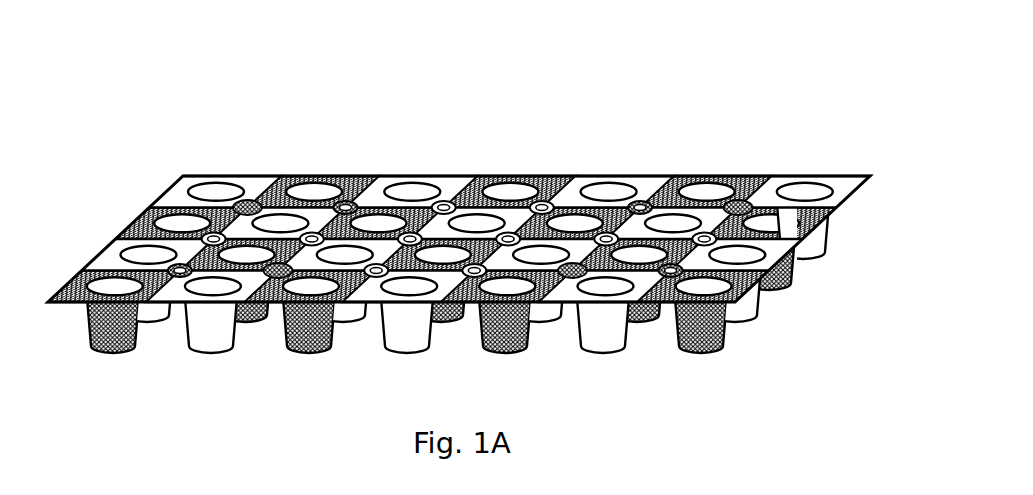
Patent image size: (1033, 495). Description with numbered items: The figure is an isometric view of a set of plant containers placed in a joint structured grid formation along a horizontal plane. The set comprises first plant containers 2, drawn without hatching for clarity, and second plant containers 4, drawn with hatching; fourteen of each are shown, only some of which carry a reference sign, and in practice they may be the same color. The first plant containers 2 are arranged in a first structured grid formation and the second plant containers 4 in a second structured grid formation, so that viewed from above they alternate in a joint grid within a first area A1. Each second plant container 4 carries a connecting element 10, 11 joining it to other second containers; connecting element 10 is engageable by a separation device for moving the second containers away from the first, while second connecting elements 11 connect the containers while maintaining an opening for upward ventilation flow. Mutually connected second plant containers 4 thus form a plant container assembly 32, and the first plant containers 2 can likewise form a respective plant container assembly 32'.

The first plant container 2 is at (222, 190).
The second plant container 4 is at (312, 190).
The connecting element 10 is at (252, 202).
The second connecting element 11 is at (448, 202).
The plant container assembly 32 is at (459, 249).
The plant container assembly 32' is at (459, 239).
The first area A1 is at (835, 410).